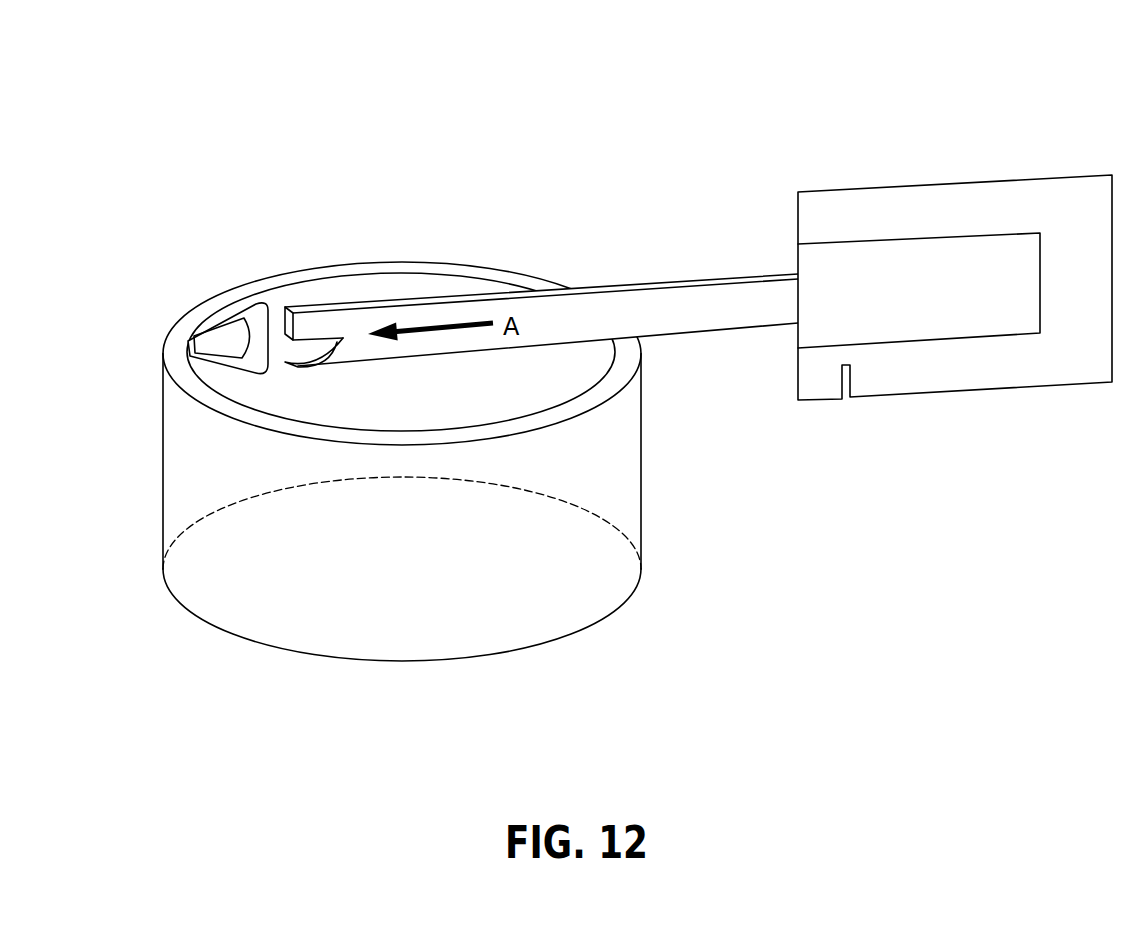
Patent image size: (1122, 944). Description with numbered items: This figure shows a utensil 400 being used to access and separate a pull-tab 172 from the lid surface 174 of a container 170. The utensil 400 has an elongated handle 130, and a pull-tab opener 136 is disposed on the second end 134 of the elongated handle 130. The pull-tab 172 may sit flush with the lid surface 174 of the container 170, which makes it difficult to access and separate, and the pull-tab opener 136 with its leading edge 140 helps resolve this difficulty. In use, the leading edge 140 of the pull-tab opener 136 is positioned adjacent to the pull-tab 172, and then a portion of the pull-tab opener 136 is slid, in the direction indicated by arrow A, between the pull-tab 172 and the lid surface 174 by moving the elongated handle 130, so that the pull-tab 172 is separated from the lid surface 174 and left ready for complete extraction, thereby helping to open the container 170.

The utensil 400 is at (698, 168).
The elongated handle 130 is at (600, 268).
The second end 134 is at (307, 297).
The pull-tab opener 136 is at (287, 352).
The leading edge 140 is at (286, 362).
The container 170 is at (253, 243).
The pull-tab 172 is at (253, 315).
The lid surface 174 is at (418, 283).